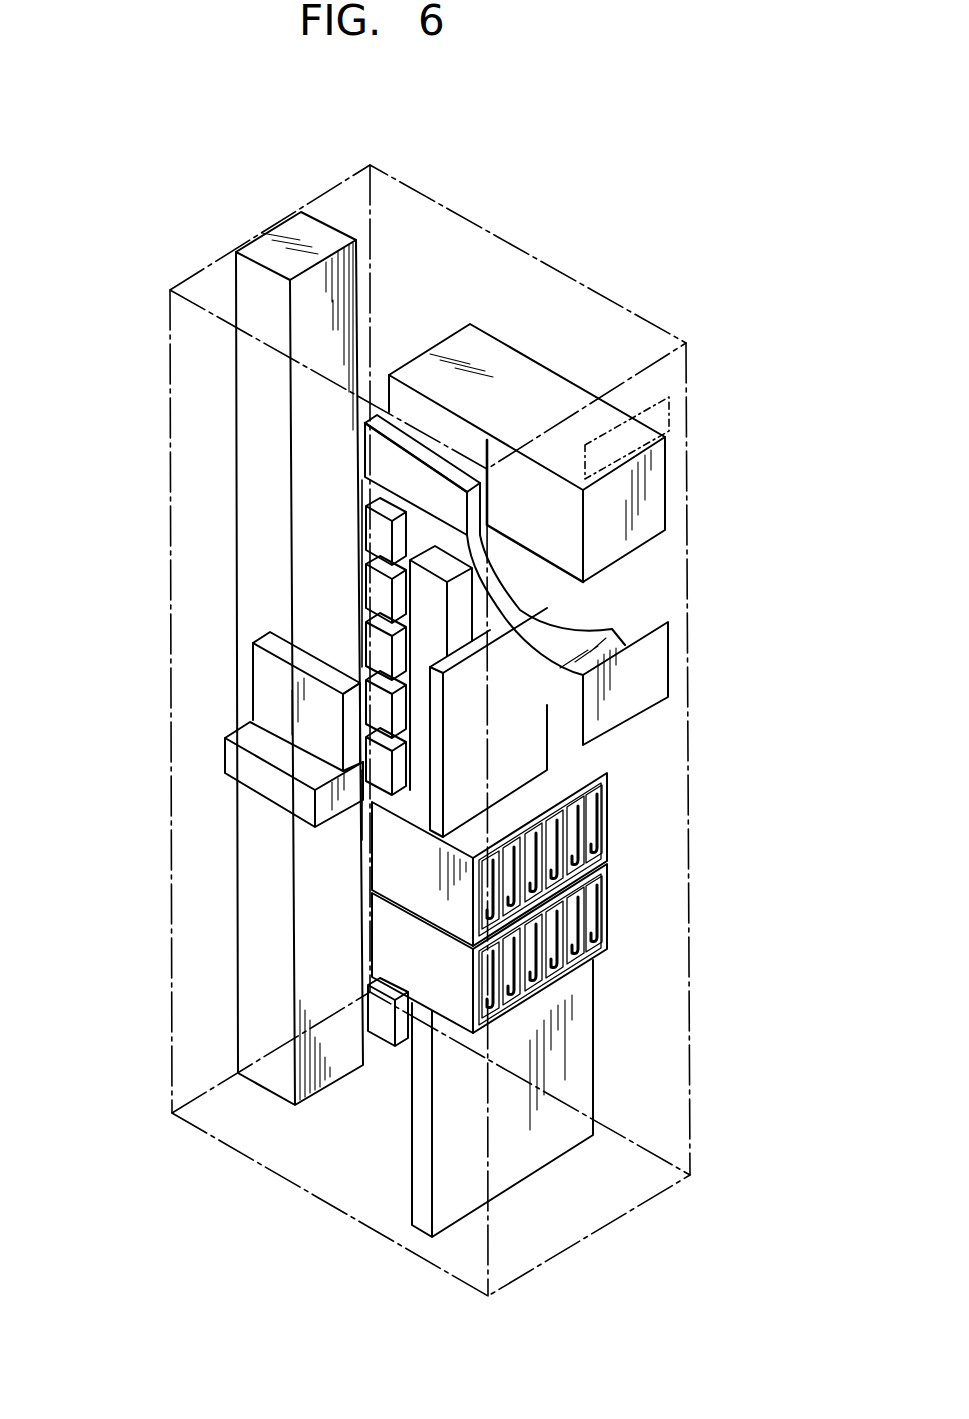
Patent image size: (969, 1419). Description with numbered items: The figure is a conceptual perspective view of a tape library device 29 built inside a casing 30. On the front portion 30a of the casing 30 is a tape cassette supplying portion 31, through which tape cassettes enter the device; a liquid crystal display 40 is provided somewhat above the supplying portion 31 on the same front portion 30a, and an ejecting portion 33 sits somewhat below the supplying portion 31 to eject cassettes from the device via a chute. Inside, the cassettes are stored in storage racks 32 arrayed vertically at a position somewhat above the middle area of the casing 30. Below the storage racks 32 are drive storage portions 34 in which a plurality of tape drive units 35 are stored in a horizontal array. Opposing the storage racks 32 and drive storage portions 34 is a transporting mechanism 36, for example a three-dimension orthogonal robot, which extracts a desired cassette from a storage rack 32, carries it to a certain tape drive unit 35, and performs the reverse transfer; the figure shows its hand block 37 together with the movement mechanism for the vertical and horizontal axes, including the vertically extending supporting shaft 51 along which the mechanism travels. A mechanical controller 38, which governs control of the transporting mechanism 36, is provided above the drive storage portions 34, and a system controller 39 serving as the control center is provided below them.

The tape library device 29 is at (621, 220).
The casing 30 is at (596, 294).
The front portion of the casing 30a is at (681, 374).
The tape cassette supplying portion 31 is at (649, 504).
The storage racks 32 is at (370, 530).
The ejecting portion 33 is at (662, 658).
The drive storage portions 34 is at (610, 772).
The tape drive units 35 is at (593, 823).
The transporting mechanism 36 is at (198, 803).
The hand block 37 is at (270, 685).
The mechanical controller 38 is at (527, 745).
The system controller 39 is at (557, 1103).
The liquid crystal display 40 is at (667, 414).
The supporting shaft 51 is at (250, 369).